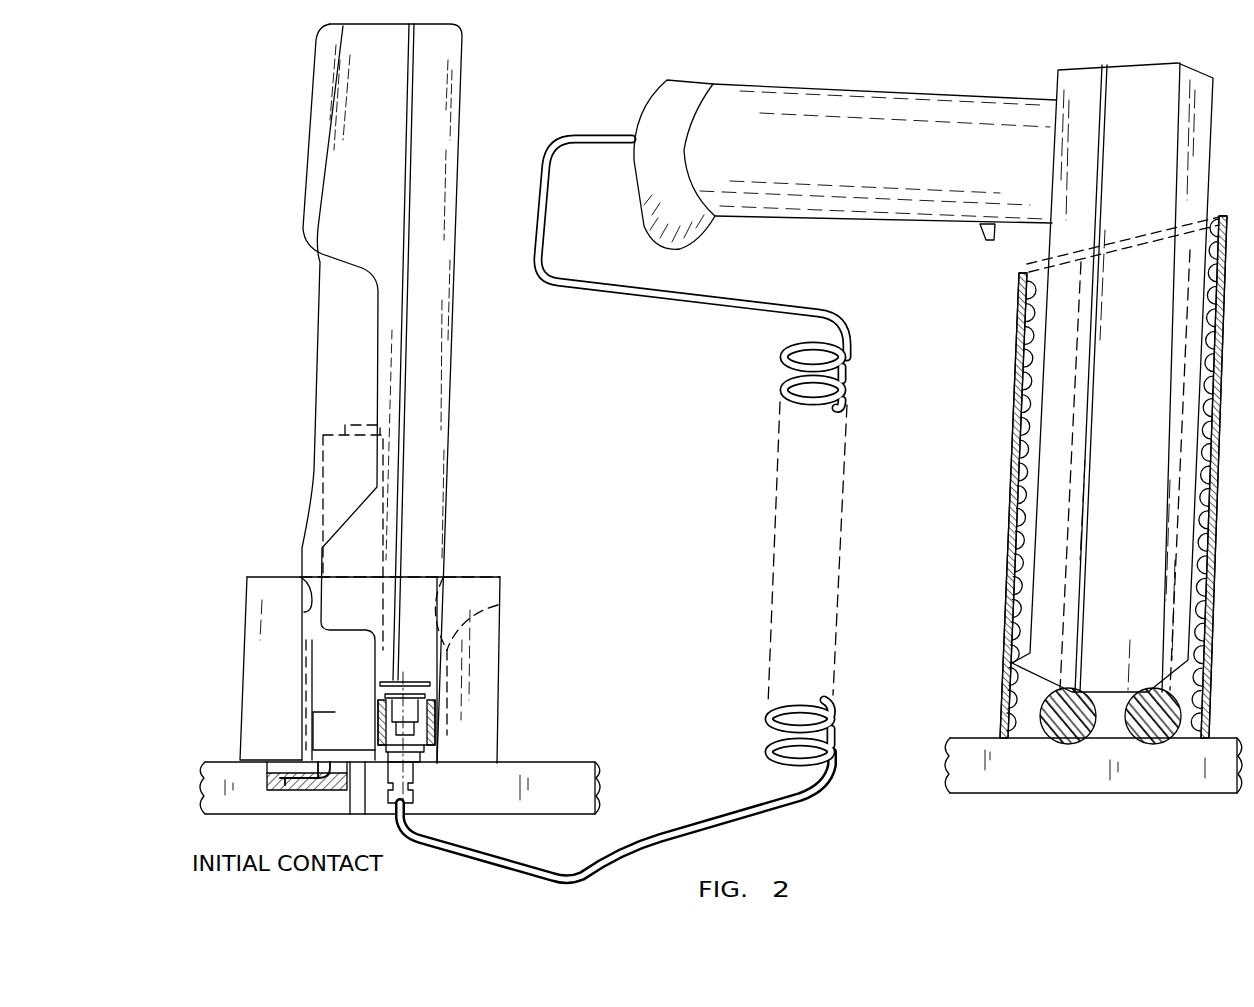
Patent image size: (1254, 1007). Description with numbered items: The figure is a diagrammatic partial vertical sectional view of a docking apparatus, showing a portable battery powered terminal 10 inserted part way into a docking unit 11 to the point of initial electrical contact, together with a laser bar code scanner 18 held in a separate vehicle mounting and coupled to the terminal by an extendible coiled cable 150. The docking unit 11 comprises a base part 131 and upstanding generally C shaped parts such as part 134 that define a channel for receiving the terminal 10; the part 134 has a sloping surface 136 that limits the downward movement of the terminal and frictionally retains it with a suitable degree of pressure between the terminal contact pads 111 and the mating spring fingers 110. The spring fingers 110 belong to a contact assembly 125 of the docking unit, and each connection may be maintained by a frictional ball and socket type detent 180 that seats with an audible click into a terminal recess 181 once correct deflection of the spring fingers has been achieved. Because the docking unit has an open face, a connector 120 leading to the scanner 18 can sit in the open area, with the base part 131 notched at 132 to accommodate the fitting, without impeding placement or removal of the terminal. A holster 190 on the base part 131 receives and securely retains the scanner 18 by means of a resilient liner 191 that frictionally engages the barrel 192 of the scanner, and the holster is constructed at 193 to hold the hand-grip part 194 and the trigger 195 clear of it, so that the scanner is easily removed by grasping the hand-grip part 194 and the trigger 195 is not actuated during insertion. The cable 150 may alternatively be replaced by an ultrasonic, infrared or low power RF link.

The terminal 10 is at (318, 47).
The docking unit 11 is at (500, 680).
The scanner 18 is at (1117, 86).
The spring fingers 110 is at (225, 767).
The contact pads 111 is at (302, 757).
The connector 120 is at (420, 795).
The contact assembly 125 is at (285, 786).
The base part 131 is at (527, 798).
The notch 132 is at (380, 815).
The C shaped part 134 is at (260, 668).
The sloping surface 136 is at (303, 578).
The cable 150 is at (765, 710).
The detent 180 is at (498, 605).
The terminal recess 181 is at (443, 572).
The holster 190 is at (1019, 403).
The resilient liner 191 is at (1031, 293).
The barrel 192 is at (1057, 513).
The holster construction 193 is at (1146, 730).
The hand-grip part 194 is at (762, 132).
The trigger 195 is at (988, 234).